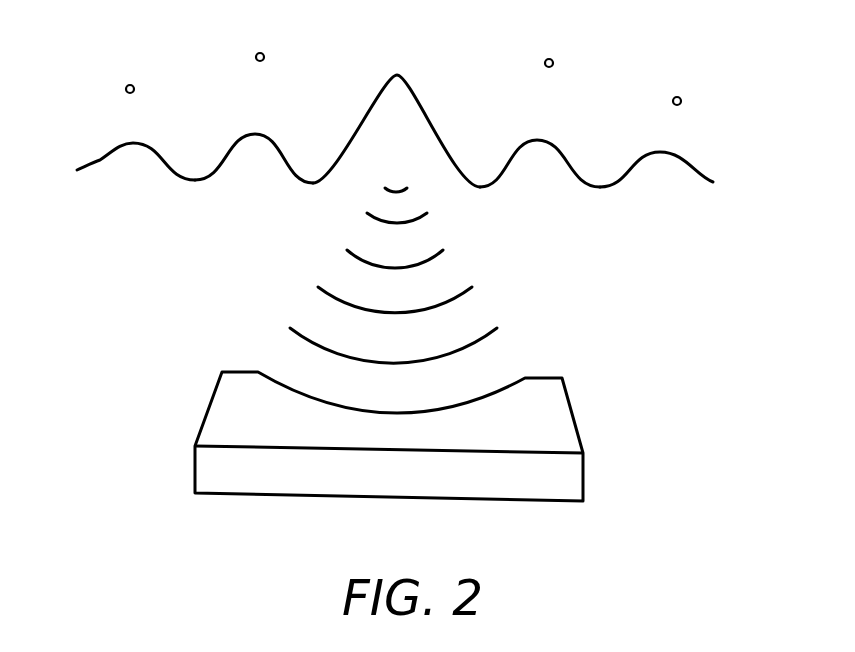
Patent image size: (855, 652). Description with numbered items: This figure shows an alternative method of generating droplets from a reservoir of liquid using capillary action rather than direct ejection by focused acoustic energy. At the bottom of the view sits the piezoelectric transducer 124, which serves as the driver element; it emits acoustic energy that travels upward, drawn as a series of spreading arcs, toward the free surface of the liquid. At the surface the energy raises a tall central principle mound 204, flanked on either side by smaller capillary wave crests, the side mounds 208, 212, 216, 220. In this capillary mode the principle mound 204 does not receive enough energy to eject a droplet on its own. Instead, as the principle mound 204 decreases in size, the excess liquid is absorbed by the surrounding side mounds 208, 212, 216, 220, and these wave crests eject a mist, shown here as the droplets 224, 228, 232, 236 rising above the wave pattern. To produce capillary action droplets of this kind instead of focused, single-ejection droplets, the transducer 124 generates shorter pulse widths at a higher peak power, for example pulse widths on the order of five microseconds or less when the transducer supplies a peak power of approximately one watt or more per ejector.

The piezoelectric transducer 124 is at (583, 465).
The principle mound 204 is at (415, 103).
The side mound 208 is at (147, 142).
The side mound 212 is at (272, 137).
The side mound 216 is at (557, 147).
The side mound 220 is at (677, 155).
The droplet 224 is at (133, 86).
The droplet 228 is at (263, 54).
The droplet 232 is at (552, 60).
The droplet 236 is at (680, 98).